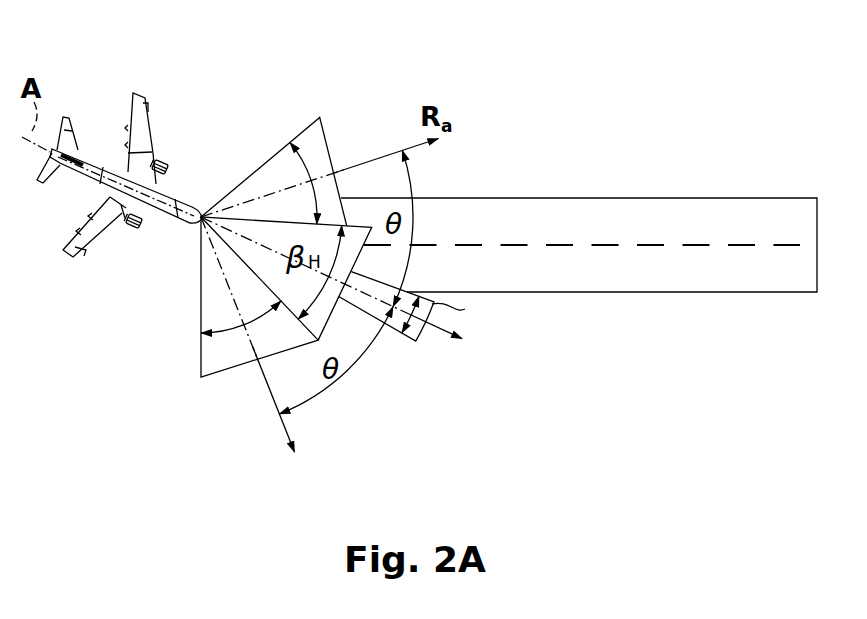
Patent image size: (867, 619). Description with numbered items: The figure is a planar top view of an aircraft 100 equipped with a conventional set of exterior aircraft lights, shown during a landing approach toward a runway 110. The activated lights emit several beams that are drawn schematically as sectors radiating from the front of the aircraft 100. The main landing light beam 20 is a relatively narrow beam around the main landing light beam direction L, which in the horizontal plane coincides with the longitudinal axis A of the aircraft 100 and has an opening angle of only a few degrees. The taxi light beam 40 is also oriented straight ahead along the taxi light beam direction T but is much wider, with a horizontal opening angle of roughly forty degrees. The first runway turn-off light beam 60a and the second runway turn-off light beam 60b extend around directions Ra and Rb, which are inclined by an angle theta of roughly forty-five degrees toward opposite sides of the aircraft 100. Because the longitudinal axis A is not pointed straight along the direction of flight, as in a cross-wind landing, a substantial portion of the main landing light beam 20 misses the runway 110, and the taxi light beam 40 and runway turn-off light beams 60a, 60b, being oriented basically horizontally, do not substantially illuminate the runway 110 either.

The aircraft 100 is at (115, 82).
The runway 110 is at (633, 188).
The main landing light beam 20 is at (417, 355).
The taxi light beam 40 is at (300, 350).
The first runway turn-off light beam 60a is at (341, 110).
The second runway turn-off light beam 60b is at (185, 395).